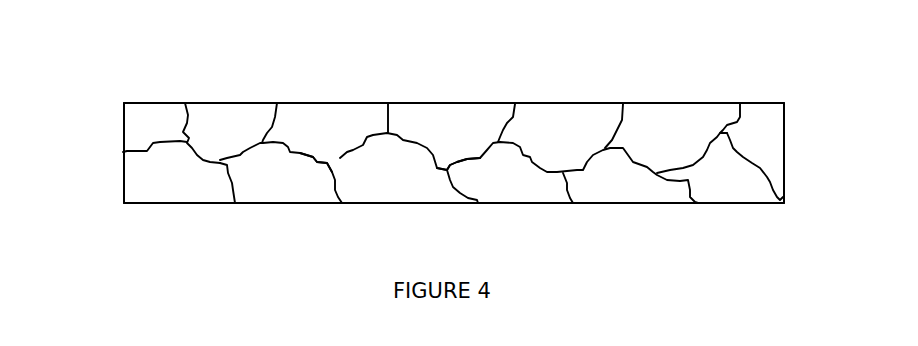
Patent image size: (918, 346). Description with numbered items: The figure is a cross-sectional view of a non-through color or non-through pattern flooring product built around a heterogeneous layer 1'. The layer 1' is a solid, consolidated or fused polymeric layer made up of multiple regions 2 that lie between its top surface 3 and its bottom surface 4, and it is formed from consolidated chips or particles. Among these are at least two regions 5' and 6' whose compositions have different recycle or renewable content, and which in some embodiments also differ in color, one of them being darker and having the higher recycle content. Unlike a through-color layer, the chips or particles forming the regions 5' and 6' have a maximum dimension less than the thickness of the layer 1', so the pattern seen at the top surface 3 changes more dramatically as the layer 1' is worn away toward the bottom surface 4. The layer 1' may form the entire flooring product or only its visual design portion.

The heterogeneous layer 1' is at (453, 112).
The multiple regions 2 is at (158, 120).
The top surface 3 is at (753, 103).
The bottom surface 4 is at (752, 203).
The region 5' is at (318, 109).
The region 6' is at (458, 108).